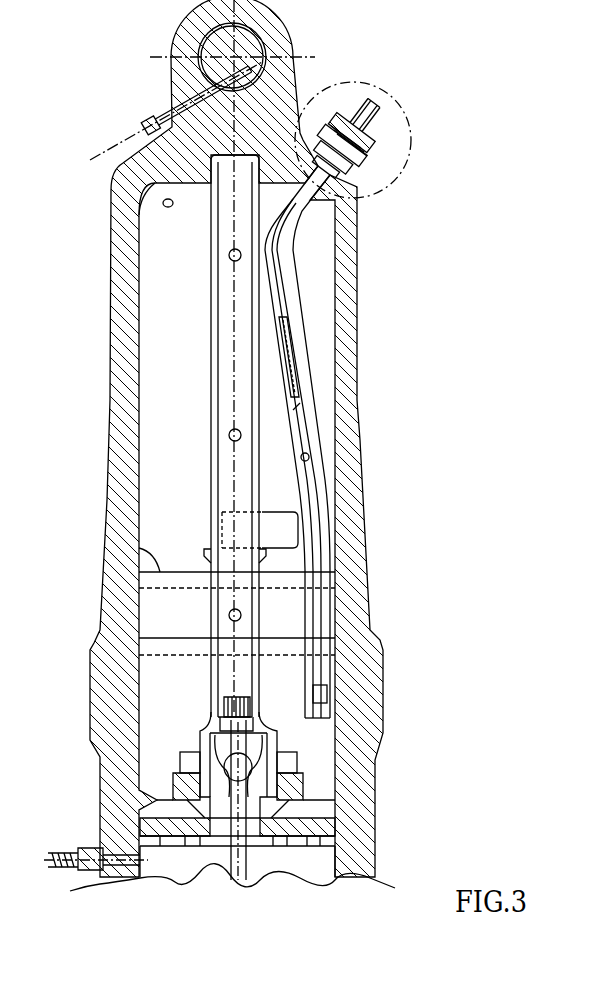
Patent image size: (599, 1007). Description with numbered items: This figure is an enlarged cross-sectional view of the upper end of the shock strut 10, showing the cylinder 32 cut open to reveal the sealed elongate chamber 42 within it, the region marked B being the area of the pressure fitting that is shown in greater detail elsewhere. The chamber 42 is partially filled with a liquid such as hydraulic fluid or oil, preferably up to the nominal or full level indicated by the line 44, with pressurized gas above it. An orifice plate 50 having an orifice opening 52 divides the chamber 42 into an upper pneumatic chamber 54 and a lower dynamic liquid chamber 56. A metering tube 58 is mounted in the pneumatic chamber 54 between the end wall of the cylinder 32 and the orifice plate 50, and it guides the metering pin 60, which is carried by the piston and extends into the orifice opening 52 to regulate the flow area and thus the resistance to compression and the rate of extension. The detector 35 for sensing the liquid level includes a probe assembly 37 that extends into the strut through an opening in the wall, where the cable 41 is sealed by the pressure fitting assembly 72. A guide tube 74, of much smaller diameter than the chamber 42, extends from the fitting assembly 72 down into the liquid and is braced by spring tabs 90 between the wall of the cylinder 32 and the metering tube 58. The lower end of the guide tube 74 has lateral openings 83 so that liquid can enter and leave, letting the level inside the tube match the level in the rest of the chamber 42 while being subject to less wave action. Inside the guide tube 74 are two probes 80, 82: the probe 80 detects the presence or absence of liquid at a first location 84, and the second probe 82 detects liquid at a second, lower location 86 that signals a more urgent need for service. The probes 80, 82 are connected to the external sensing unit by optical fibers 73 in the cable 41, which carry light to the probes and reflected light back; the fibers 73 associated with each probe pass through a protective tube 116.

The shock strut 10 is at (452, 518).
The cylinder 32 is at (113, 663).
The sensor assembly or detector 35 is at (302, 303).
The probe assembly 37 is at (337, 683).
The cable 41 is at (359, 98).
The sealed elongate chamber 42 is at (165, 298).
The nominal or full liquid level line 44 is at (139, 548).
The orifice plate 50 is at (318, 840).
The orifice opening 52 is at (310, 818).
The pneumatic chamber 54 is at (168, 393).
The dynamic liquid chamber 56 is at (330, 858).
The metering tube 58 is at (207, 222).
The metering pin 60 is at (237, 865).
The pressure fitting assembly 72 is at (364, 166).
The optical fibers 73 is at (350, 236).
The guide tube 74 is at (283, 340).
The probe 80 is at (330, 574).
The second probe 82 is at (321, 650).
The lateral openings 83 is at (297, 275).
The first liquid level location 84 is at (160, 590).
The second liquid level location 86 is at (157, 633).
The spring tabs 90 is at (302, 320).
The protective tube 116 is at (300, 403).
The detail B is at (407, 130).